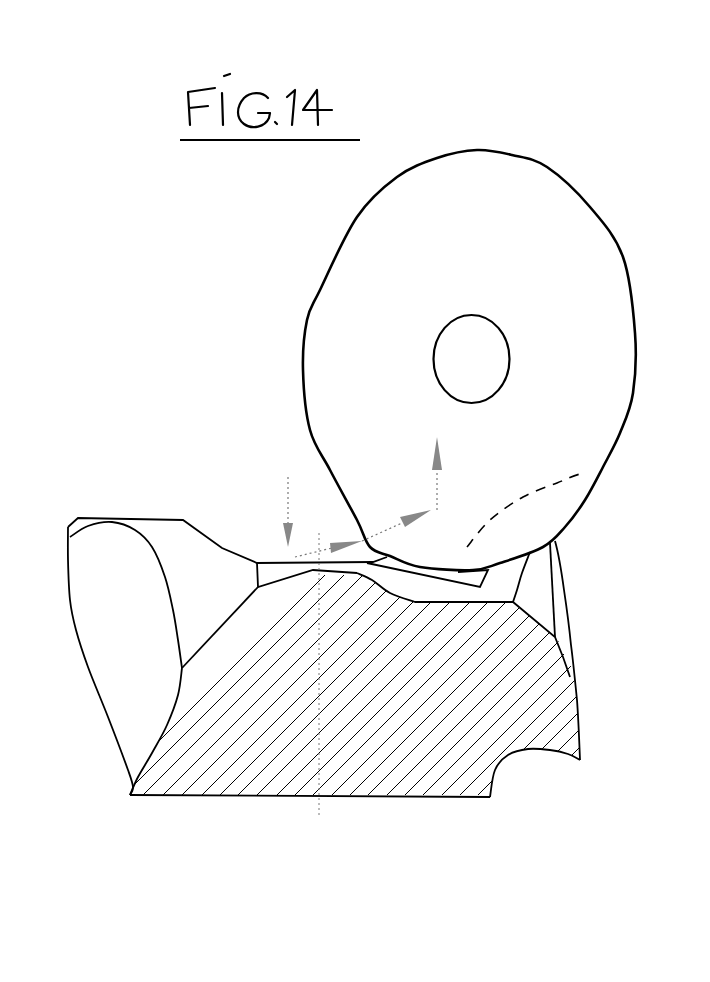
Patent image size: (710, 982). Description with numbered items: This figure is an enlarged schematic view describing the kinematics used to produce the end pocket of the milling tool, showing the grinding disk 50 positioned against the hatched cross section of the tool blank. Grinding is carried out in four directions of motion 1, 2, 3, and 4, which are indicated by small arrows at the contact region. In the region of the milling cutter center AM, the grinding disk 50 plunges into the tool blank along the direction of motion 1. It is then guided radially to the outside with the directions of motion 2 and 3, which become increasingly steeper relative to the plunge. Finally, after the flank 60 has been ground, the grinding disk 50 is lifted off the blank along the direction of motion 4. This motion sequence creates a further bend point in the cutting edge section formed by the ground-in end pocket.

The grinding disk 50 is at (570, 227).
The flank 60 is at (580, 474).
The milling cutter center AM is at (320, 765).
The direction of motion 1 is at (283, 497).
The direction of motion 2 is at (328, 532).
The direction of motion 3 is at (396, 513).
The direction of motion 4 is at (437, 454).